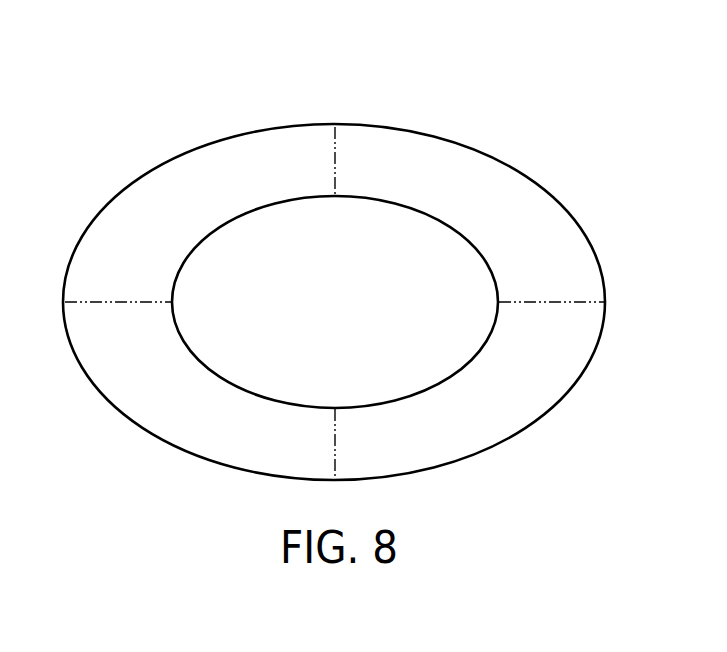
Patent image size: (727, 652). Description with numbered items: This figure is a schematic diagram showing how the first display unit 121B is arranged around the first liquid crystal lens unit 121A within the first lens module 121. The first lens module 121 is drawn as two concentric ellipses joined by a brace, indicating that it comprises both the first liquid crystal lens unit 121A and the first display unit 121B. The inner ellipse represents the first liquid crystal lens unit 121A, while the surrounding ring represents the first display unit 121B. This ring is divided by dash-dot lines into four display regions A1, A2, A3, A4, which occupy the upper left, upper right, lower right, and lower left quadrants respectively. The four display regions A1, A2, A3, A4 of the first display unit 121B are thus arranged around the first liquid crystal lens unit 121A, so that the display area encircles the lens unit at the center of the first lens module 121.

The first lens module 121 is at (181, 62).
The first liquid crystal lens unit 121A is at (379, 248).
The first display unit 121B is at (257, 170).
The display region A1 is at (189, 197).
The display region A2 is at (481, 197).
The display region A3 is at (481, 408).
The display region A4 is at (190, 408).